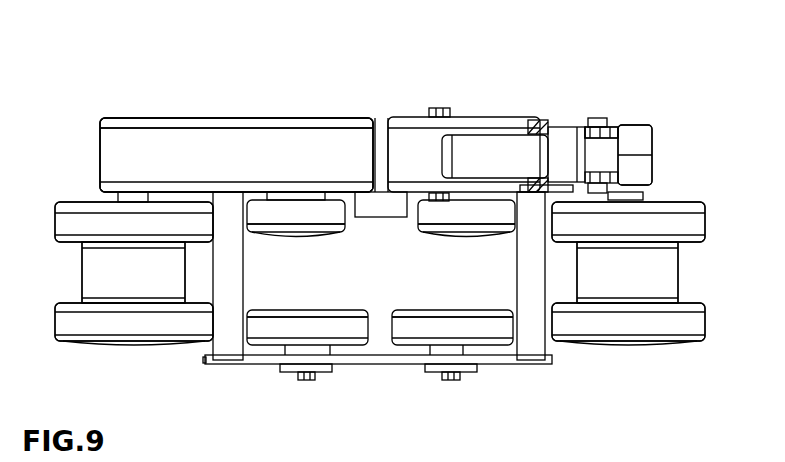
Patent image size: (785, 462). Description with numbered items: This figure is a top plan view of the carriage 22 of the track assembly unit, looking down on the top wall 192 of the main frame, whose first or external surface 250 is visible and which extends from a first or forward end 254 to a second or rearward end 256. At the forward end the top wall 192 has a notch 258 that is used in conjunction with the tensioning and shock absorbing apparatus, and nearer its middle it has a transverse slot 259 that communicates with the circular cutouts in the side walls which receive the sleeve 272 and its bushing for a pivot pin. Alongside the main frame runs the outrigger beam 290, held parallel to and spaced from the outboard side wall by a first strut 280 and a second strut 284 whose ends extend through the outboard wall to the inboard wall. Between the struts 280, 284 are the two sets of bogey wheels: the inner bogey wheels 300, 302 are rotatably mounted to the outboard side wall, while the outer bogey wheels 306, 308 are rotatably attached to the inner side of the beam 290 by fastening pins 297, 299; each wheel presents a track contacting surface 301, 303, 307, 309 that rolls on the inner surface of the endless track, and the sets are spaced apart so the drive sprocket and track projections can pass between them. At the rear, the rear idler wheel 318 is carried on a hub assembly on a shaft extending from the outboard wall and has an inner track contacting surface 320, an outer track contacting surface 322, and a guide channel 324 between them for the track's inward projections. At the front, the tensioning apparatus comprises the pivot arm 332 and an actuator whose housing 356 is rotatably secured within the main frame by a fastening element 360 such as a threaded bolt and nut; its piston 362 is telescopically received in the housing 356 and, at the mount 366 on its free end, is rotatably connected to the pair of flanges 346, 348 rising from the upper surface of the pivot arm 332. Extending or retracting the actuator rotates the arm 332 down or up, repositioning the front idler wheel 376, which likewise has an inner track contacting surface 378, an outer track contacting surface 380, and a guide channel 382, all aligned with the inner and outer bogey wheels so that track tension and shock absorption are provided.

The carriage 22 is at (199, 66).
The top wall 192 is at (177, 108).
The external surface 250 is at (298, 168).
The forward end 254 is at (522, 123).
The rearward end 256 is at (108, 128).
The notch 258 is at (463, 143).
The transverse slot 259 is at (377, 143).
The sleeve 272 is at (388, 122).
The first strut 280 is at (528, 343).
The second strut 284 is at (223, 345).
The outrigger beam 290 is at (373, 367).
The fastening element or pin 297 is at (455, 377).
The fastening element or pin 299 is at (307, 375).
The inner bogey wheel 300 is at (473, 237).
The track contacting surface 301 is at (435, 217).
The inner bogey wheel 302 is at (267, 237).
The track contacting surface 303 is at (330, 220).
The outer bogey wheel 306 is at (468, 310).
The track contacting surface 307 is at (420, 327).
The outer bogey wheel 308 is at (263, 310).
The track contacting surface 309 is at (337, 323).
The rear idler wheel 318 is at (62, 364).
The inner track contacting surface 320 is at (70, 218).
The outer track contacting surface 322 is at (105, 330).
The guide channel 324 is at (82, 275).
The pivot arm 332 is at (653, 128).
The flange 346 is at (642, 142).
The flange 348 is at (620, 163).
The housing 356 is at (505, 169).
The fastening element 360 is at (442, 108).
The piston 362 is at (598, 118).
The washer 366 is at (617, 127).
The front idler wheel 376 is at (666, 365).
The inner track contacting surface 378 is at (700, 220).
The outer track contacting surface 380 is at (695, 325).
The guide channel 382 is at (673, 270).